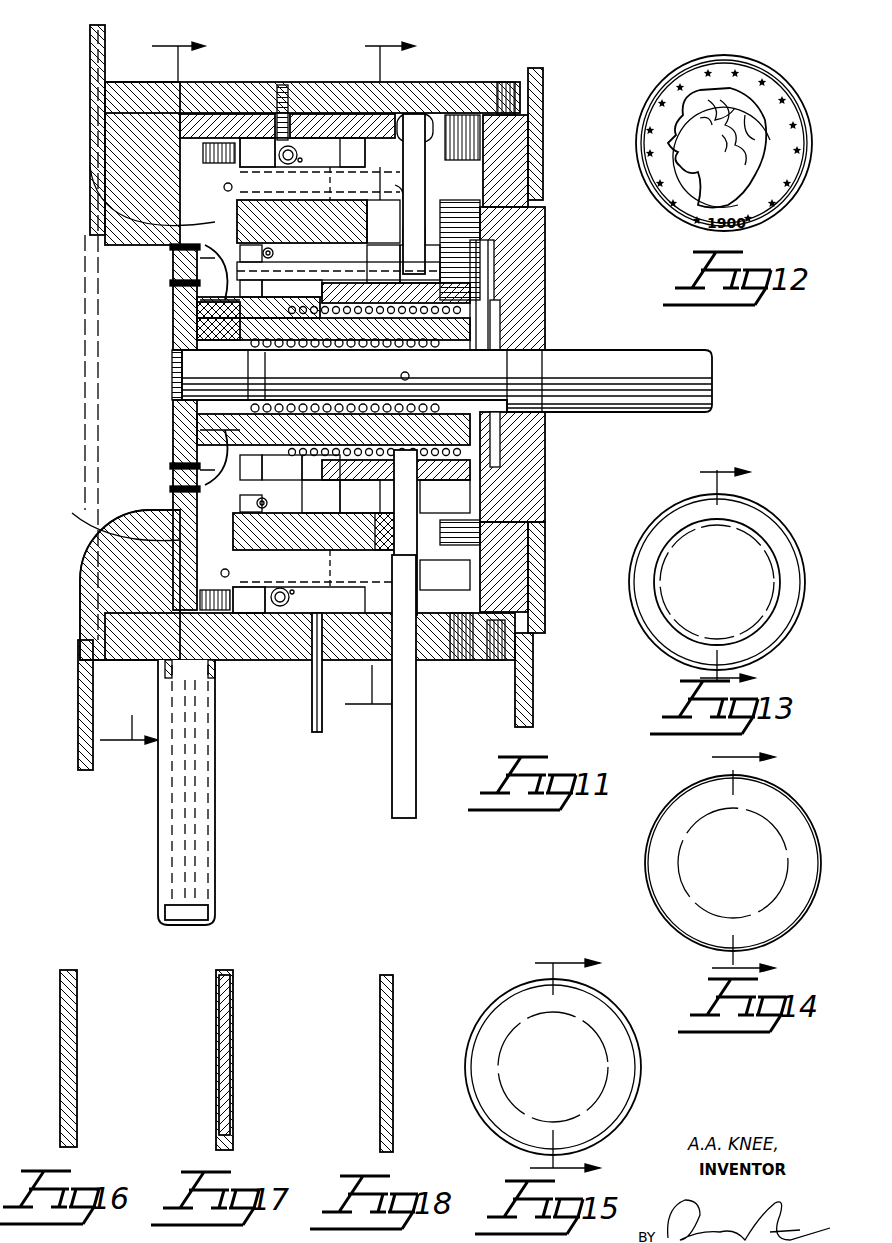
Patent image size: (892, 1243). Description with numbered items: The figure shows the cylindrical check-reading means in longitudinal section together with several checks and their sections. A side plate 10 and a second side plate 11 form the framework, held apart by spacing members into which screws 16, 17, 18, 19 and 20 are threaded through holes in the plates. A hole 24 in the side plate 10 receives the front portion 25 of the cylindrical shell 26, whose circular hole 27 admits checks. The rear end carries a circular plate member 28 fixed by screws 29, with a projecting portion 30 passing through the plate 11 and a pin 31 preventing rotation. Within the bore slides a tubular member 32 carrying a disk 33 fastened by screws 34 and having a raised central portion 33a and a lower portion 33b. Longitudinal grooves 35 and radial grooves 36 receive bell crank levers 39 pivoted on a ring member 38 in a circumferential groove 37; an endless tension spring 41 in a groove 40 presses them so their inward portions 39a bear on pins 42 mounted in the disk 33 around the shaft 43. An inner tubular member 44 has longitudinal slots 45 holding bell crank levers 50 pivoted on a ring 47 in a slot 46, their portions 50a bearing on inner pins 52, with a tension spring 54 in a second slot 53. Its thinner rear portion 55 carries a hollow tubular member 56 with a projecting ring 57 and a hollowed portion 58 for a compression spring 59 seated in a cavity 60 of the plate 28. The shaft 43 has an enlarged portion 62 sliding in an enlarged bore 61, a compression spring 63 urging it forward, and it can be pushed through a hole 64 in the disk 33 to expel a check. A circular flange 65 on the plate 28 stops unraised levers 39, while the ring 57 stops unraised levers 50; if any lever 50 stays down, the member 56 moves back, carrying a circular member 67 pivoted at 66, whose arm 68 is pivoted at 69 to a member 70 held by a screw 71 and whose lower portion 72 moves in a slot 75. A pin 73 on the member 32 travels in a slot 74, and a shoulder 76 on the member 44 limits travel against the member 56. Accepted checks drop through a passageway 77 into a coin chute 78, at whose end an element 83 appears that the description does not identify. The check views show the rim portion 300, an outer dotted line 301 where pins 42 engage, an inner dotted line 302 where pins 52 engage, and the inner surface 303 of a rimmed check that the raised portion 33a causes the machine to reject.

In FIG. 11, the side plate 10 is at (102, 78).
In FIG. 11, the side plate 11 is at (544, 88).
In FIG. 13, the screw 16 is at (739, 576).
In FIG. 15, the screw 17 is at (577, 1064).
In FIG. 14, the screw 18 is at (760, 860).
In FIG. 11, the screw 19 is at (391, 382).
In FIG. 11, the screw 20 is at (164, 390).
In FIG. 11, the hole 24 is at (88, 100).
In FIG. 11, the front portion 25 is at (88, 568).
In FIG. 11, the cylindrical shell 26 is at (185, 84).
In FIG. 11, the circular hole 27 is at (100, 385).
In FIG. 11, the circular plate member 28 is at (510, 530).
In FIG. 11, the screw 29 is at (502, 90).
In FIG. 11, the circular projecting portion 30 is at (546, 548).
In FIG. 11, the pin 31 is at (515, 172).
In FIG. 11, the tubular member 32 is at (298, 200).
In FIG. 11, the disk 33 is at (180, 330).
In FIG. 11, the raised central portion 33a is at (195, 300).
In FIG. 11, the lower portion 33b is at (200, 258).
In FIG. 11, the screw 34 is at (237, 375).
In FIG. 11, the longitudinal groove 35 is at (332, 177).
In FIG. 11, the radial groove 36 is at (150, 512).
In FIG. 11, the circumferential groove 37 is at (238, 175).
In FIG. 11, the ring member 38 is at (233, 189).
In FIG. 11, the bell crank lever 39 is at (332, 165).
In FIG. 11, the inwardly projecting portion 39a is at (190, 225).
In FIG. 11, the circumferential groove 40 is at (298, 152).
In FIG. 11, the endless tension spring 41 is at (302, 161).
In FIG. 11, the pin 42 is at (170, 247).
In FIG. 11, the shaft 43 is at (190, 365).
In FIG. 11, the tubular member 44 is at (200, 335).
In FIG. 11, the longitudinal slot 45 is at (396, 397).
In FIG. 11, the circumferential slot 46 is at (262, 268).
In FIG. 11, the ring 47 is at (249, 379).
In FIG. 11, the bell crank lever 50 is at (323, 396).
In FIG. 11, the lever portion 50a is at (210, 272).
In FIG. 11, the pin 52 is at (170, 283).
In FIG. 11, the circumferential slot 53 is at (251, 378).
In FIG. 11, the endless tension spring 54 is at (274, 253).
In FIG. 11, the thinner portion 55 is at (375, 443).
In FIG. 11, the hollow tubular member 56 is at (375, 310).
In FIG. 11, the projecting ring 57 is at (470, 270).
In FIG. 11, the hollowed out portion 58 is at (362, 285).
In FIG. 11, the compression spring 59 is at (500, 312).
In FIG. 11, the hollowed out portion 60 is at (545, 233).
In FIG. 11, the enlarged bore 61 is at (256, 366).
In FIG. 11, the enlarged portion 62 is at (545, 368).
In FIG. 11, the compression spring 63 is at (265, 380).
In FIG. 11, the hole 64 is at (176, 390).
In FIG. 11, the circular flange 65 is at (455, 185).
In FIG. 11, the pivot 66 is at (345, 375).
In FIG. 11, the circular member 67 is at (395, 528).
In FIG. 11, the projecting arm 68 is at (395, 185).
In FIG. 11, the pivot 69 is at (418, 122).
In FIG. 11, the member 70 is at (205, 128).
In FIG. 11, the screw 71 is at (286, 86).
In FIG. 11, the lower portion 72 is at (408, 748).
In FIG. 11, the pin 73 is at (312, 712).
In FIG. 11, the slot 74 is at (317, 655).
In FIG. 11, the slot 75 is at (438, 650).
In FIG. 11, the shoulder 76 is at (319, 467).
In FIG. 11, the passageway 77 is at (170, 668).
In FIG. 11, the coin chute 78 is at (200, 748).
In FIG. 11, the cap 83 is at (205, 918).
In FIG. 12, the rim portion 300 is at (806, 103).
In FIG. 13, the rim portion 300 is at (790, 514).
In FIG. 15, the rim portion 300 is at (640, 1072).
In FIG. 16, the rim portion 300 is at (77, 975).
In FIG. 17, the rim portion 300 is at (233, 975).
In FIG. 12, the outer dotted line 301 is at (805, 137).
In FIG. 13, the outer dotted line 301 is at (800, 560).
In FIG. 14, the outer dotted line 301 is at (800, 800).
In FIG. 15, the outer dotted line 301 is at (636, 1058).
In FIG. 12, the inner dotted line 302 is at (770, 150).
In FIG. 13, the inner dotted line 302 is at (773, 578).
In FIG. 14, the inner dotted line 302 is at (788, 838).
In FIG. 15, the inner dotted line 302 is at (600, 1026).
In FIG. 17, the inner surface 303 is at (230, 1038).